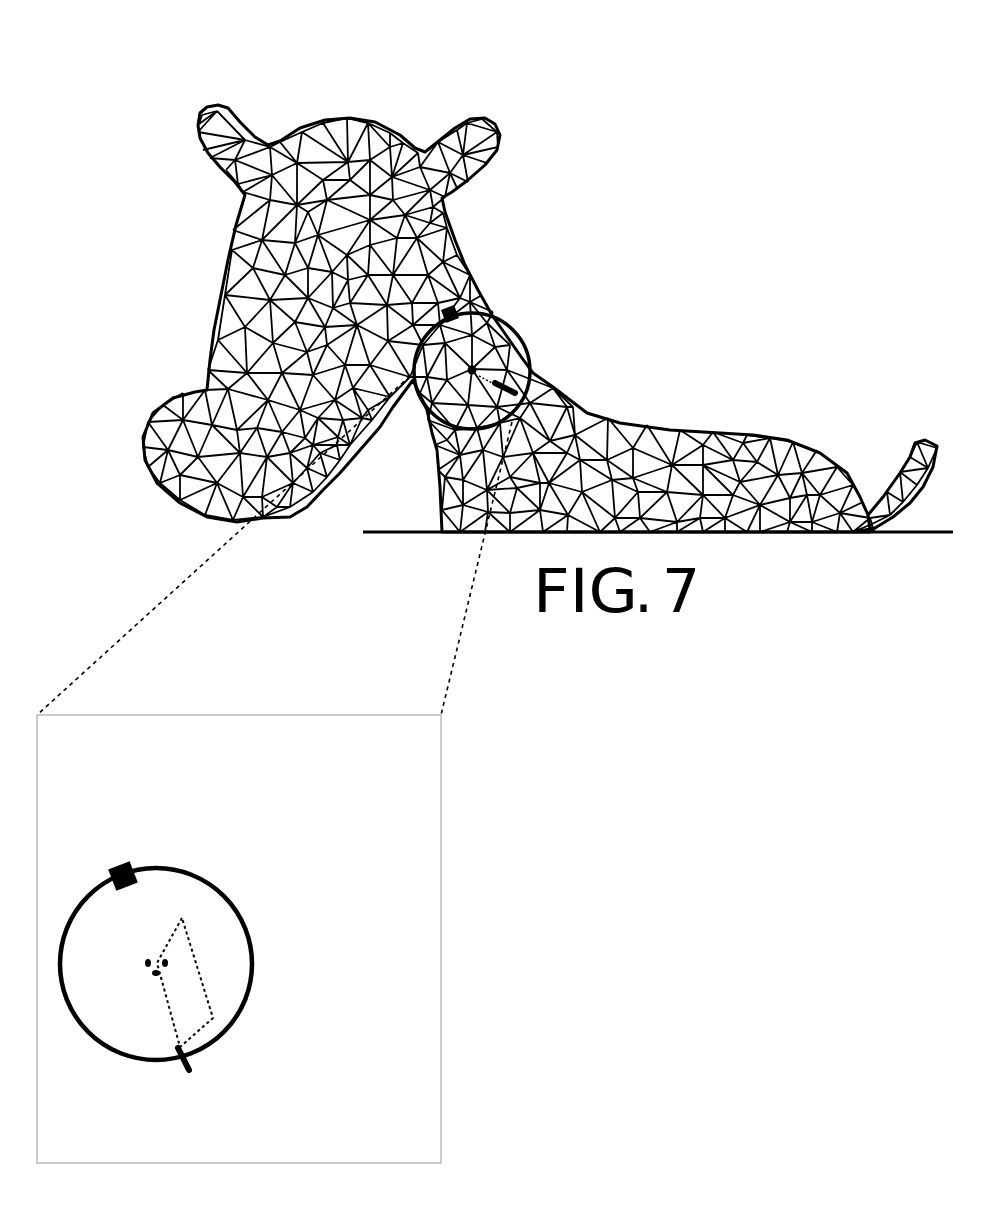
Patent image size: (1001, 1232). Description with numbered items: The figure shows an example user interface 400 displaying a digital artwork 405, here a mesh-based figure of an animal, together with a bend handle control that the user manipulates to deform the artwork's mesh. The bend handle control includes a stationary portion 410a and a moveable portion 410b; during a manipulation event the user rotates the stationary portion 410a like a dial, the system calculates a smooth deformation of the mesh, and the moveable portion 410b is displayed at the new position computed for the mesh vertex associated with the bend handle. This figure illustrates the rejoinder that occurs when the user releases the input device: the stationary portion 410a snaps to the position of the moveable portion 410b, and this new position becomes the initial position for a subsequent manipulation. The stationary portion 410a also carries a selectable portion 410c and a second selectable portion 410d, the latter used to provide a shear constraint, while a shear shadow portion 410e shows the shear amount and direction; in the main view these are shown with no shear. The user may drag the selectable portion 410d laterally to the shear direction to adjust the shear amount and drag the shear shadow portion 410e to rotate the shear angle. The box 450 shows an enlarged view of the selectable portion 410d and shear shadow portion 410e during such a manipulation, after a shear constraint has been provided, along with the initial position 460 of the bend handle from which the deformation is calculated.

The user interface 400 is at (575, 40).
The digital artwork 405 is at (210, 40).
The stationary portion 410a is at (476, 366).
The moveable portion 410b is at (489, 380).
The selectable portion 410c is at (452, 312).
The selectable portion 410d is at (532, 390).
The shear shadow portion 410e is at (503, 384).
The box 450 is at (408, 763).
The initial position 460 is at (155, 955).